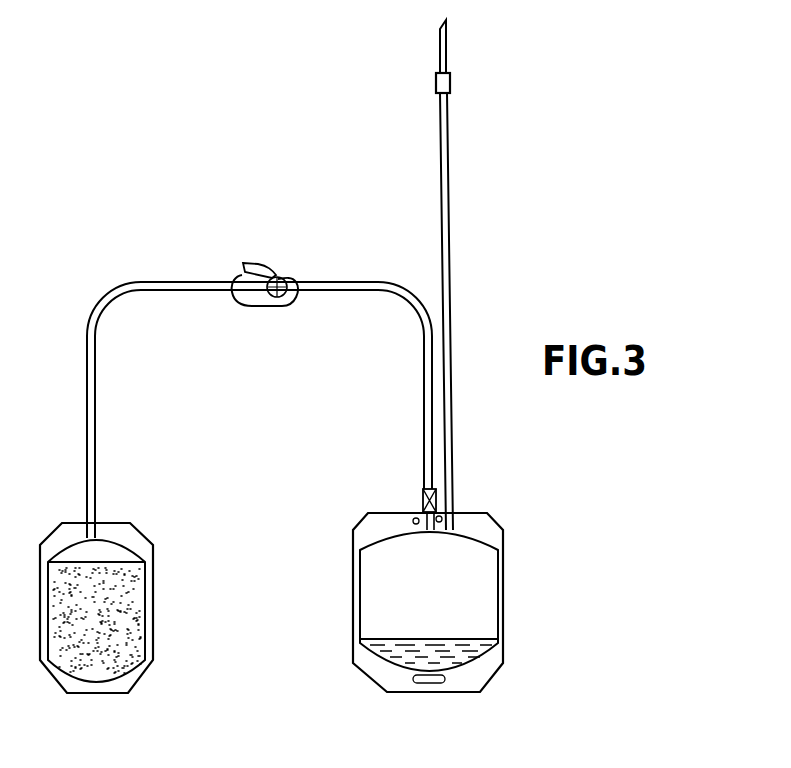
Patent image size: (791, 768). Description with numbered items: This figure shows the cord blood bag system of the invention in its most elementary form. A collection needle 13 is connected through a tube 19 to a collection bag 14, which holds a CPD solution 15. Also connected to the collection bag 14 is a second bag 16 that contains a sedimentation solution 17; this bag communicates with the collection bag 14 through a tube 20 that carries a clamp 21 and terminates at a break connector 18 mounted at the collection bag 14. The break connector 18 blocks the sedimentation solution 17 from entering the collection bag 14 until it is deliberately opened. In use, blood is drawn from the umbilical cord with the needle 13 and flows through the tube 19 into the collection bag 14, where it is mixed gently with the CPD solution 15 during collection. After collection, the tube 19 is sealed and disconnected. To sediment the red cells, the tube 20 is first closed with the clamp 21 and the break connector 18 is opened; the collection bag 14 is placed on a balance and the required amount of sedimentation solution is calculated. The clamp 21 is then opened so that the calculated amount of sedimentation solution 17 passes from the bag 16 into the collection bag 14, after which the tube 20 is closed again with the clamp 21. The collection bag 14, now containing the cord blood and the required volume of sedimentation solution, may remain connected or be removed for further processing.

The collection needle 13 is at (443, 52).
The collection bag 14 is at (485, 527).
The CPD solution 15 is at (477, 648).
The bag 16 is at (127, 532).
The sedimentation solution 17 is at (130, 622).
The break connector 18 is at (420, 492).
The tube 19 is at (445, 240).
The tube 20 is at (167, 282).
The clamp 21 is at (272, 268).